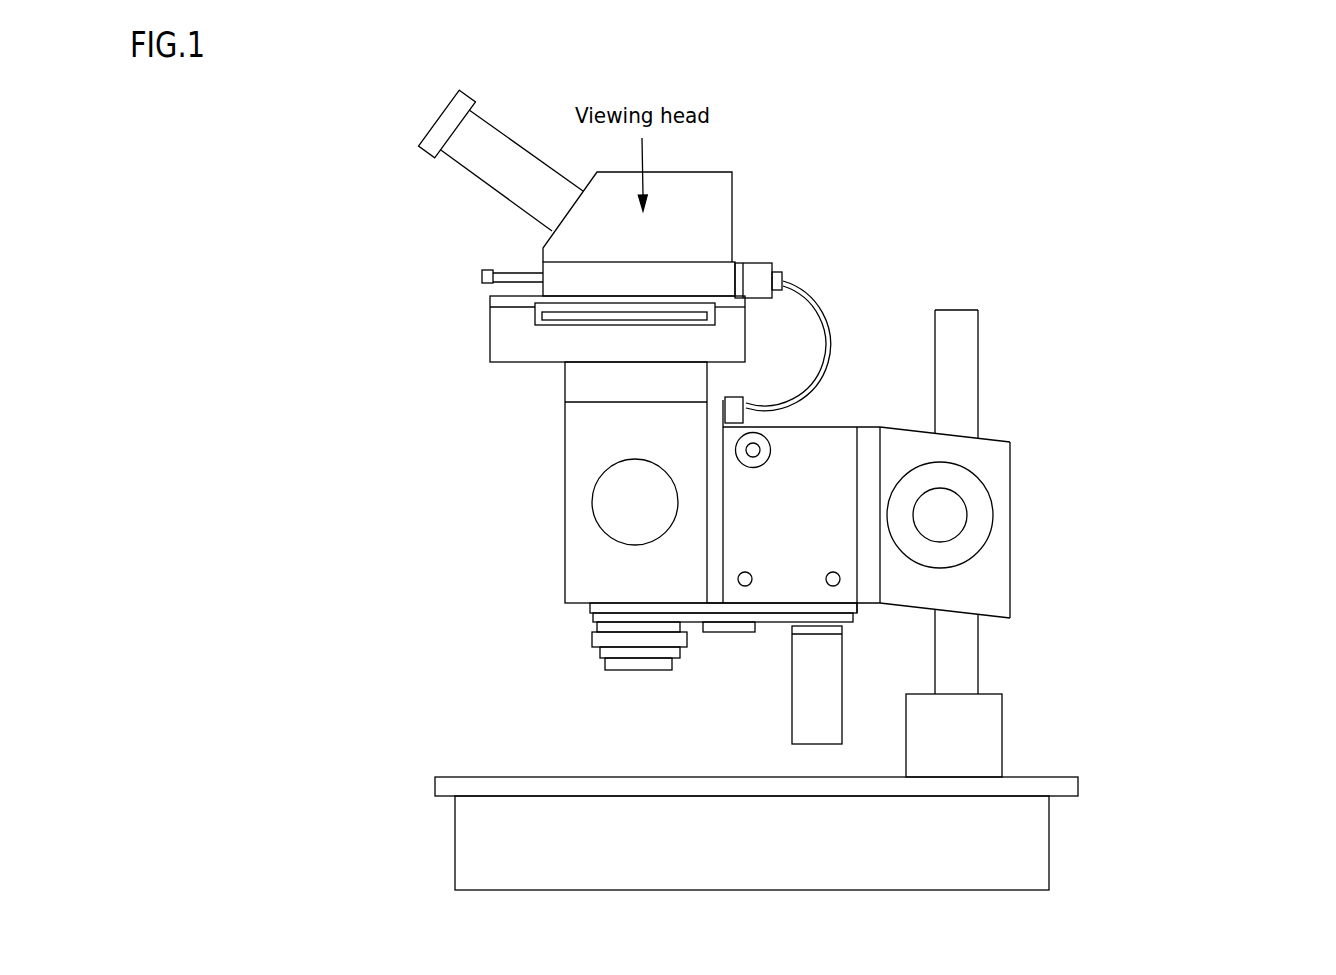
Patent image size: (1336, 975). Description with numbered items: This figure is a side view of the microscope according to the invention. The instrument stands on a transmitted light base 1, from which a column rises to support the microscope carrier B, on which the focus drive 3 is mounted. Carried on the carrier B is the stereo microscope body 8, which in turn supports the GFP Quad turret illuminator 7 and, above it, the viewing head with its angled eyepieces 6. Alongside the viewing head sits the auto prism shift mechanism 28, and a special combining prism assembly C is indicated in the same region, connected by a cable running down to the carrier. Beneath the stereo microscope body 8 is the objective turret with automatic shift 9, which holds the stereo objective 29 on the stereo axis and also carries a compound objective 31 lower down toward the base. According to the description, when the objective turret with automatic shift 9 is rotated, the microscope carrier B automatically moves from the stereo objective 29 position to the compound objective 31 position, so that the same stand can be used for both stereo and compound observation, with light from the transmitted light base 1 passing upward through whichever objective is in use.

The eyepieces 6 is at (425, 128).
The auto prism shift mechanism 28 is at (967, 183).
The special combining prism assembly C is at (749, 281).
The GFP Quad turret illuminator 7 is at (492, 326).
The stereo microscope body 8 is at (441, 482).
The microscope carrier B is at (838, 604).
The focus drive 3 is at (978, 470).
The objective turret with automatic shift 9 is at (568, 602).
The stereo objective 29 is at (582, 654).
The compound objective 31 is at (1056, 685).
The transmitted light base 1 is at (756, 833).